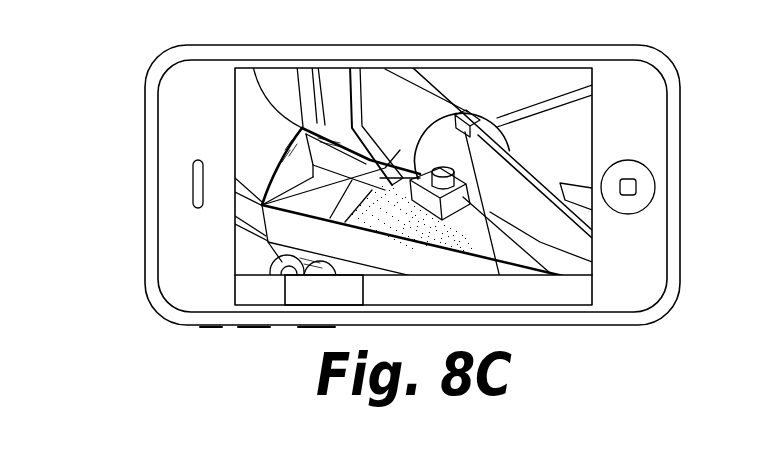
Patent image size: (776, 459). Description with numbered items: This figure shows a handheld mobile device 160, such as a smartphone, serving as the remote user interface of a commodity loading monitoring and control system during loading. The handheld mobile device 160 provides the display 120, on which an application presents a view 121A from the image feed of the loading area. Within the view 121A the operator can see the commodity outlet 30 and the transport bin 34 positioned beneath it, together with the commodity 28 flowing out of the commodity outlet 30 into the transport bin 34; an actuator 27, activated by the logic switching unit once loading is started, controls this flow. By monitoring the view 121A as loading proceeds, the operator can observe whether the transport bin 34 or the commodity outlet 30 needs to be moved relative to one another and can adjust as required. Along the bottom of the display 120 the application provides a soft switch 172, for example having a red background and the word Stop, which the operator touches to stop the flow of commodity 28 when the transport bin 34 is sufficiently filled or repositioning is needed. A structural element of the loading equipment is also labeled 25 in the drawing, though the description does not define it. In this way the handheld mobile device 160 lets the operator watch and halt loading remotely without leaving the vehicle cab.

The agitator rod 25 is at (353, 102).
The actuator 27 is at (485, 252).
The commodity 28 is at (262, 205).
The commodity outlet 30 is at (302, 128).
The transport bin 34 is at (280, 156).
The display 120 is at (235, 87).
The view 121A is at (578, 135).
The handheld mobile device 160 is at (670, 79).
The soft switch 172 is at (285, 292).